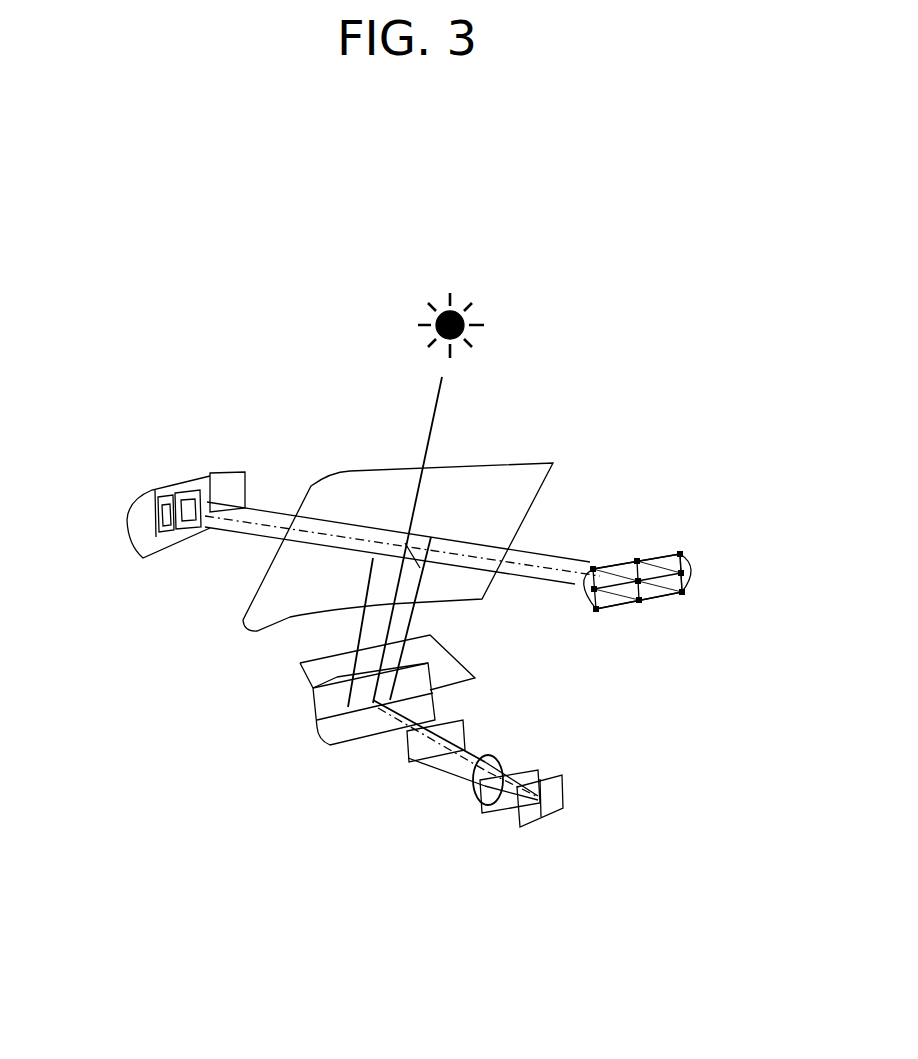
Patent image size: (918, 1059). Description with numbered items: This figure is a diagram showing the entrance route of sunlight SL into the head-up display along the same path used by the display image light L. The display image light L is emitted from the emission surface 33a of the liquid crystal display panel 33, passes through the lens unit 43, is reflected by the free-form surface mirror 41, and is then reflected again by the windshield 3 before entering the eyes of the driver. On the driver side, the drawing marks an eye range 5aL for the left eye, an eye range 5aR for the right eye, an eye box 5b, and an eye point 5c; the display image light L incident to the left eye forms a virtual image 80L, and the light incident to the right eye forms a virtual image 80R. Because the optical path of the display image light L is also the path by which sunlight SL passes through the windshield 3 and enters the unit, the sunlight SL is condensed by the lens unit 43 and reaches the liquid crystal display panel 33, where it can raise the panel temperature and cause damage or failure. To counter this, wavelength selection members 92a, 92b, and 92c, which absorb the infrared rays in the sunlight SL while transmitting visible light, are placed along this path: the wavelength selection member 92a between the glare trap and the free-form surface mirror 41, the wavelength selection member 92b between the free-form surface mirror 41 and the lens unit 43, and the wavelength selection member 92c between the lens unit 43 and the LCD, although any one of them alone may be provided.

The windshield 3 is at (513, 462).
The sunlight SL is at (433, 423).
The display image light L is at (531, 546).
The virtual image 80L is at (152, 490).
The virtual image 80R is at (222, 472).
The eye range of a left eye 5aL is at (585, 604).
The eye range of a right eye 5aR is at (693, 568).
The eye box 5b is at (668, 603).
The eye point 5c is at (647, 553).
The wavelength selection member 92a is at (313, 687).
The wavelength selection member 92b is at (463, 710).
The wavelength selection member 92c is at (537, 768).
The free-form surface mirror 41 is at (315, 728).
The lens unit 43 is at (473, 778).
The liquid crystal display panel 33 is at (563, 808).
The emission surface 33a is at (507, 817).